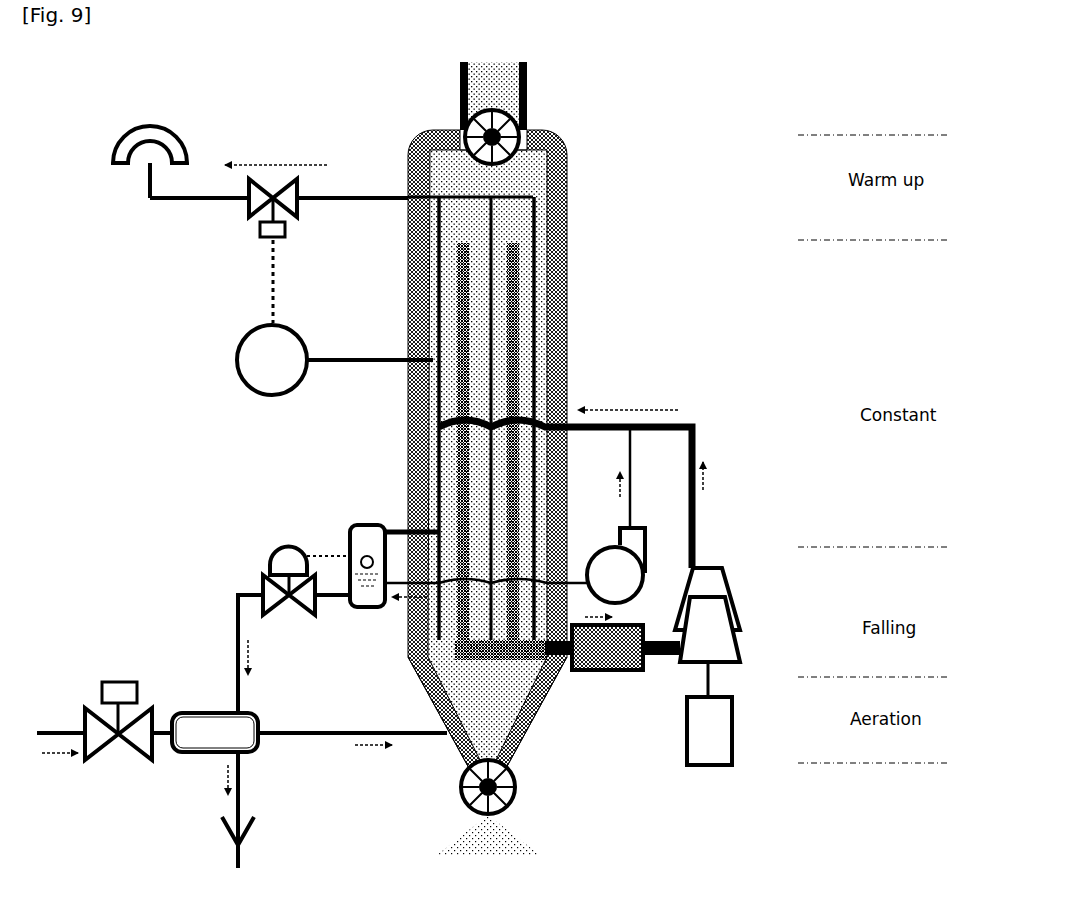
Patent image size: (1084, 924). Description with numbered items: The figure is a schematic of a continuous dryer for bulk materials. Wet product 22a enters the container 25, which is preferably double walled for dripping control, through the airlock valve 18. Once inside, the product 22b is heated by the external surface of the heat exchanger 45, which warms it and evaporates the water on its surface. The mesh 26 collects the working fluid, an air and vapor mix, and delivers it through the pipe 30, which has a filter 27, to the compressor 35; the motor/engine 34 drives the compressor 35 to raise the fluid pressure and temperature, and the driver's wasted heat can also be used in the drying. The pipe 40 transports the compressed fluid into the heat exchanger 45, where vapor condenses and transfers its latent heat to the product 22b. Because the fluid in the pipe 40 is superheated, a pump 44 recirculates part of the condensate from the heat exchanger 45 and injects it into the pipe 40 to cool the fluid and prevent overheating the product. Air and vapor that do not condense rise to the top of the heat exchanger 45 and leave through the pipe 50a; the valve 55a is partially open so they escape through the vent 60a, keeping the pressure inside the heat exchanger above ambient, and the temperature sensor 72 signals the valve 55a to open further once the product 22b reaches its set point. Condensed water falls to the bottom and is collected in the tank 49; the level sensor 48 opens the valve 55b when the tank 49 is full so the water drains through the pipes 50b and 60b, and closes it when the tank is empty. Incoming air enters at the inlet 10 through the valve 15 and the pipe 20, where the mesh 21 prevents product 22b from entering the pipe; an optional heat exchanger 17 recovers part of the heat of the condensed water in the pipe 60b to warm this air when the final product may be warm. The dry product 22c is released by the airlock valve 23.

The inlet 10 is at (50, 728).
The valve 15 is at (92, 760).
The heat exchanger 17 is at (190, 757).
The airlock valve 18 is at (466, 126).
The pipe 20 is at (150, 730).
The mesh 21 is at (432, 718).
The wet product 22a is at (512, 92).
The product 22b is at (457, 213).
The dry product 22c is at (466, 843).
The airlock valve 23 is at (515, 805).
The container 25 is at (418, 392).
The mesh 26 is at (462, 265).
The filter 27 is at (626, 675).
The pipe 30 is at (664, 660).
The motor/engine 34 is at (688, 740).
The compressor 35 is at (722, 570).
The pipe 40 is at (698, 445).
The pump 44 is at (612, 548).
The heat exchanger 45 is at (535, 382).
The level sensor 48 is at (361, 559).
The tank 49 is at (365, 525).
The pipe 50a is at (405, 195).
The pipe 50b is at (312, 608).
The valve 55a is at (250, 206).
The valve 55b is at (263, 585).
The vent 60a is at (150, 196).
The pipe 60b is at (238, 615).
The temperature sensor 72 is at (258, 394).